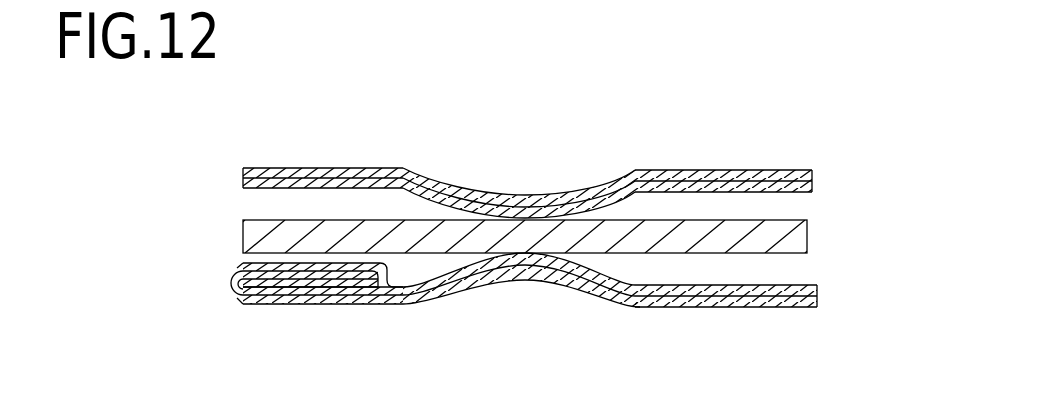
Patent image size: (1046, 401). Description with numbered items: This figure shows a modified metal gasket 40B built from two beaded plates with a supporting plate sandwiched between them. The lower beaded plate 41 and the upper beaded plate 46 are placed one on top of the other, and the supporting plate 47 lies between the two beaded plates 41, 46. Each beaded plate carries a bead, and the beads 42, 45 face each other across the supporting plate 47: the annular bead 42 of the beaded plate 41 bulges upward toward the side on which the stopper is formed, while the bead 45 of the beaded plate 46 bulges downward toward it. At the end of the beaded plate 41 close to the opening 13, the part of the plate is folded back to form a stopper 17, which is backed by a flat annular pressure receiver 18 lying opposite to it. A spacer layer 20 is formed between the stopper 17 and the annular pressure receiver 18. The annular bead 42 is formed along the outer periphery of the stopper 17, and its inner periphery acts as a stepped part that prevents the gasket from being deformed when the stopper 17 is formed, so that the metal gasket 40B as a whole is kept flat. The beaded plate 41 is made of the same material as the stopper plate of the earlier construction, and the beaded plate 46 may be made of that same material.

The opening 13 is at (233, 292).
The stopper 17 is at (328, 272).
The annular pressure receiver 18 is at (325, 302).
The spacer layer 20 is at (273, 295).
The modified metal gasket 40B is at (832, 143).
The beaded plate 41 is at (795, 286).
The annular bead 42 is at (503, 276).
The bead 45 is at (522, 202).
The beaded plate 46 is at (765, 170).
The supporting plate 47 is at (804, 238).